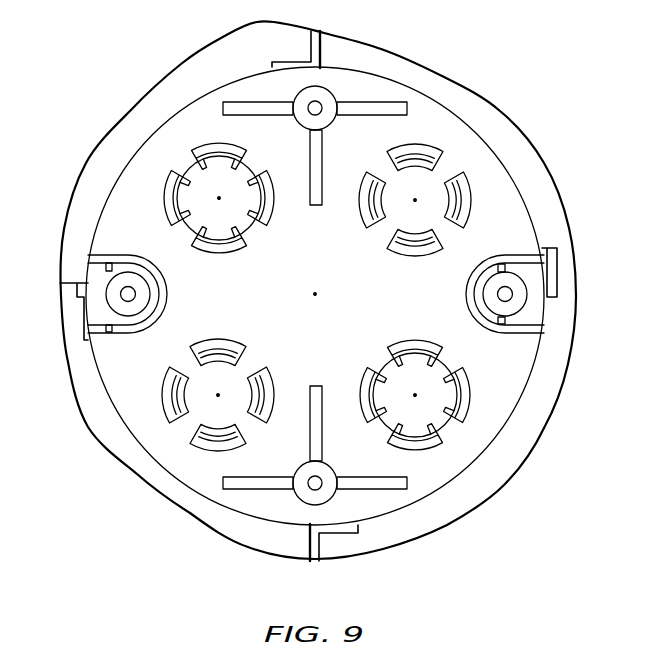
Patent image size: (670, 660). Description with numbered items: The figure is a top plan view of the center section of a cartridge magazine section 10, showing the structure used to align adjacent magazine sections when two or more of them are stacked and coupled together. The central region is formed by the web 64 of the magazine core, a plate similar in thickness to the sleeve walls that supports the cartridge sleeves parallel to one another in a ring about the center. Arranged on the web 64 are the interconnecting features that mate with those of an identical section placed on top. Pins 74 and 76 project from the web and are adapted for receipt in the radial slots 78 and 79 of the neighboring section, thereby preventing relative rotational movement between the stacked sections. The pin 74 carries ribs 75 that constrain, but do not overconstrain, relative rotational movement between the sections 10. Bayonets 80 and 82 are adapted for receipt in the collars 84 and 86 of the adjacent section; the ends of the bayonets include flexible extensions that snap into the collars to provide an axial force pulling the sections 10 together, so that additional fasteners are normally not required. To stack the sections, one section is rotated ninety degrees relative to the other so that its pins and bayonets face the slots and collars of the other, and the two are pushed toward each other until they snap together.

The section 10 is at (312, 291).
The web 64 is at (157, 473).
The pin 74 is at (522, 308).
The ribs 75 is at (480, 296).
The pin 76 is at (107, 307).
The radial slot 78 is at (512, 282).
The radial slot 79 is at (90, 279).
The bayonet 80 is at (425, 447).
The bayonet 82 is at (162, 158).
The collar 84 is at (412, 429).
The collar 86 is at (210, 152).